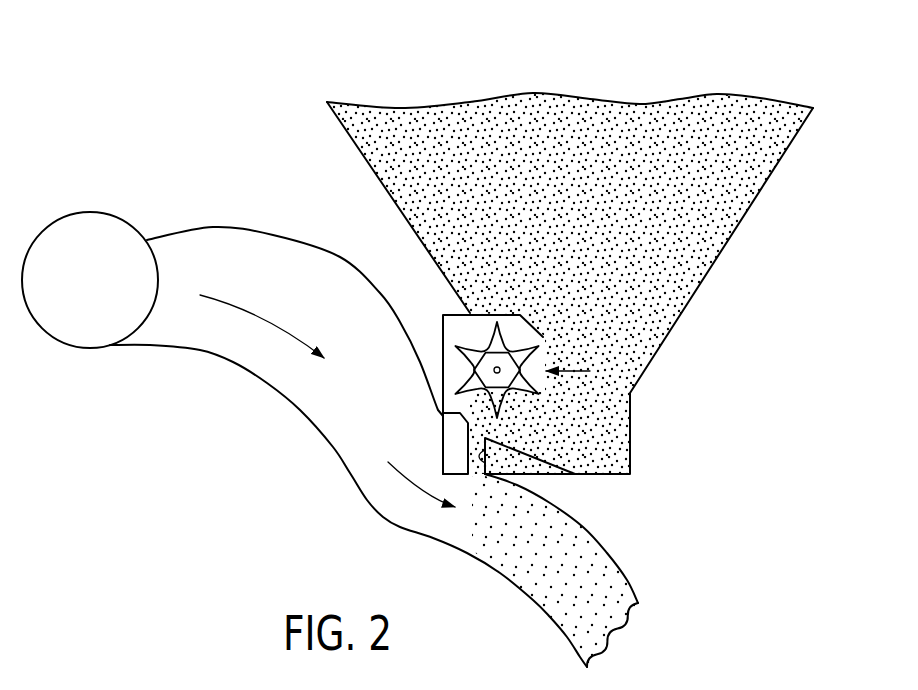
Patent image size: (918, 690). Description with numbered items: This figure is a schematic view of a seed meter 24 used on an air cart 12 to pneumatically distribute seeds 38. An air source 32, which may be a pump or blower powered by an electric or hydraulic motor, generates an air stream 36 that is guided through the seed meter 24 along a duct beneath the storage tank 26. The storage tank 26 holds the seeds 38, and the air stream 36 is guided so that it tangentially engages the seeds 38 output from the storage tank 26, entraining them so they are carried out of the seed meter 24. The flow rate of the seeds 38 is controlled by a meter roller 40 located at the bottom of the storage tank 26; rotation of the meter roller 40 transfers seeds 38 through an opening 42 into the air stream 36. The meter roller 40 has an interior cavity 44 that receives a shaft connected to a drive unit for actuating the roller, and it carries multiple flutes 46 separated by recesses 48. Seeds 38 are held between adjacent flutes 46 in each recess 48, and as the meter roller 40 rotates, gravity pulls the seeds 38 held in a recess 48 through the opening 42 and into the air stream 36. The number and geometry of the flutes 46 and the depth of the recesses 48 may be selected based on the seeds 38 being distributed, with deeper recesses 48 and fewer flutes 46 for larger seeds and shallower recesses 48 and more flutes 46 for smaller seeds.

The air cart 12 is at (191, 88).
The seed meter 24 is at (428, 310).
The storage tank 26 is at (355, 138).
The air source 32 is at (88, 212).
The air stream 36 is at (265, 313).
The seeds 38 is at (735, 203).
The meter roller 40 is at (568, 371).
The opening 42 is at (485, 465).
The interior cavity 44 is at (496, 357).
The flutes 46 is at (462, 346).
The recesses 48 is at (507, 343).